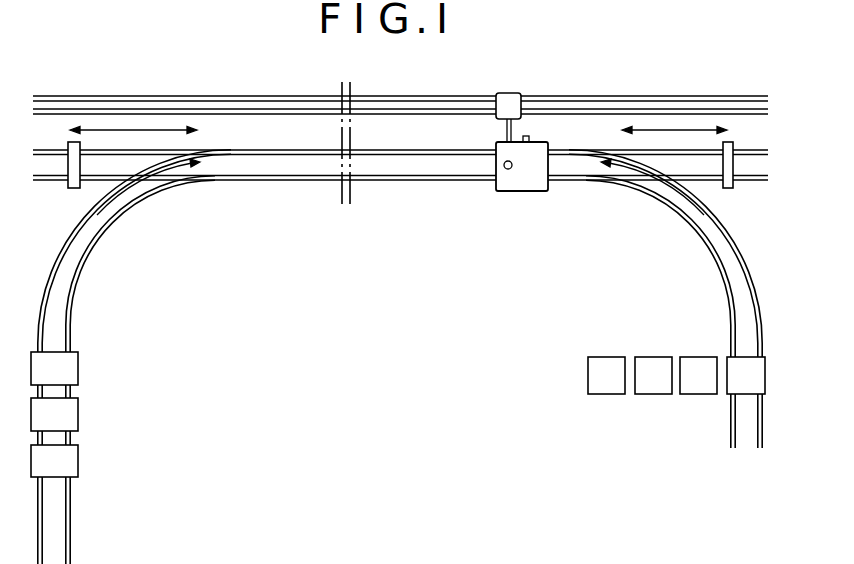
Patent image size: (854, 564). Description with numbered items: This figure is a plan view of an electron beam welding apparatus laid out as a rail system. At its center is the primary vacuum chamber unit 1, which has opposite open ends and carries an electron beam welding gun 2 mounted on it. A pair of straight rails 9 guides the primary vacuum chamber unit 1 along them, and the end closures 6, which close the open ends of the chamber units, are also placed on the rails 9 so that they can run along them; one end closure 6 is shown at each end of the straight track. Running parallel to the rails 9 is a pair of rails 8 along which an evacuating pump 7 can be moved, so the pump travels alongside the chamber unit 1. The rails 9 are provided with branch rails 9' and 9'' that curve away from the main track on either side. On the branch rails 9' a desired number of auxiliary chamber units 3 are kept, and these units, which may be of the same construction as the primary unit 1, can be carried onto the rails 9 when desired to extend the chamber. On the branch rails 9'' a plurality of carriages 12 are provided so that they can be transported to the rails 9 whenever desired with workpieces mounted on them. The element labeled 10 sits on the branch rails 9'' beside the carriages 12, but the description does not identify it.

The primary vacuum chamber unit 1 is at (520, 191).
The electron beam welding gun 2 is at (529, 137).
The auxiliary chamber units 3 is at (65, 411).
The end closure 6 is at (74, 188).
The evacuating pump 7 is at (508, 96).
The rails 8 is at (436, 96).
The straight rails 9 is at (400, 183).
The branch rails 9' is at (134, 357).
The branch rails 9'' is at (665, 299).
The unloading station 10 is at (734, 364).
The carriages 12 is at (608, 396).